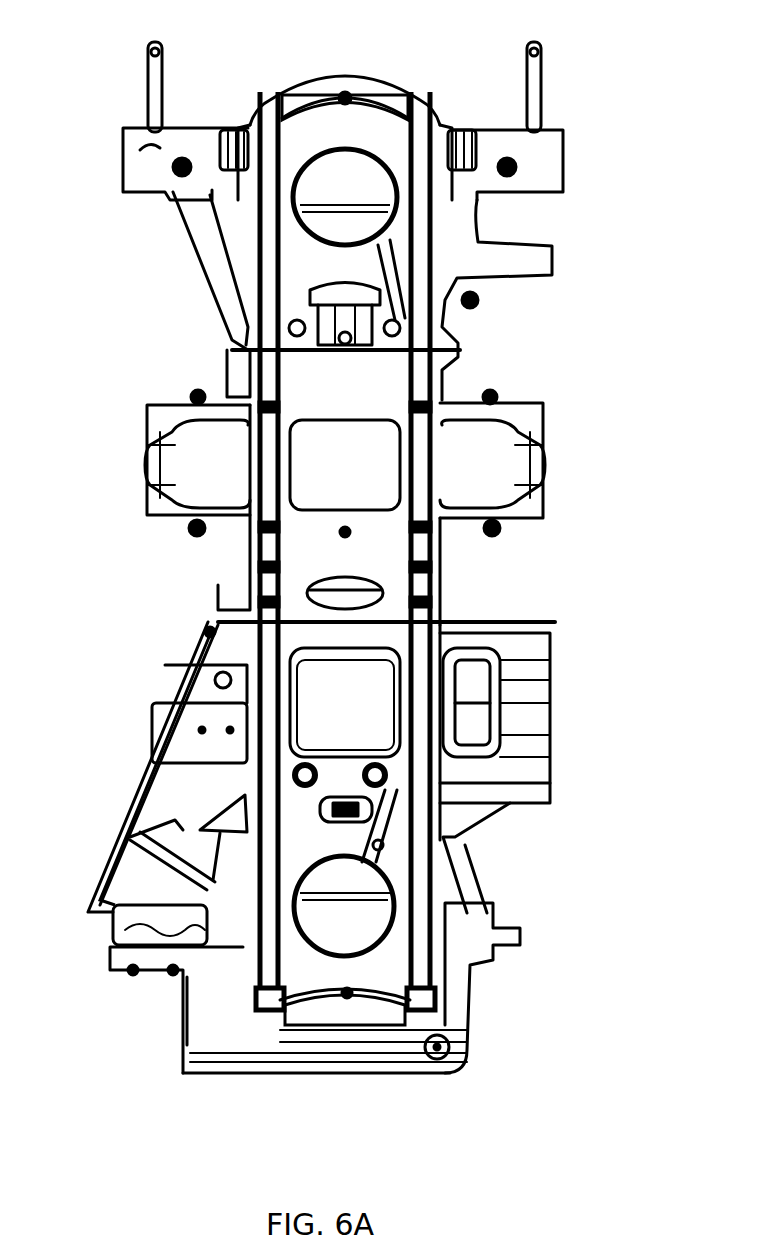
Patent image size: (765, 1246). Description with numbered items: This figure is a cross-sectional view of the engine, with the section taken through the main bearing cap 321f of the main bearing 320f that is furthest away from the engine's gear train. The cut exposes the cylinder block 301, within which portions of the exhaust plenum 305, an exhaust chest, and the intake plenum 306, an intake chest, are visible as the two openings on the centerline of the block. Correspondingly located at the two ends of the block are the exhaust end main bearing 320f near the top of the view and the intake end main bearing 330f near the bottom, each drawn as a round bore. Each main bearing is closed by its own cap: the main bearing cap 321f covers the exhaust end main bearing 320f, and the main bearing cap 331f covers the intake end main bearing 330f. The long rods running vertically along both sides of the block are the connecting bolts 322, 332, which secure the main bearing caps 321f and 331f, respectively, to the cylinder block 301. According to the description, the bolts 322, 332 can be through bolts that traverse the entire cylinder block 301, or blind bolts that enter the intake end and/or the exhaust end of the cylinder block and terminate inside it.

The cylinder block 301 is at (240, 652).
The exhaust plenum 305 is at (322, 475).
The intake plenum 306 is at (324, 719).
The exhaust end main bearing 320f is at (318, 196).
The main bearing cap 321f is at (318, 118).
The connecting bolts 322 is at (272, 163).
The intake end main bearing 330f is at (312, 937).
The main bearing cap 331f is at (357, 988).
The connecting bolts 332 is at (270, 945).